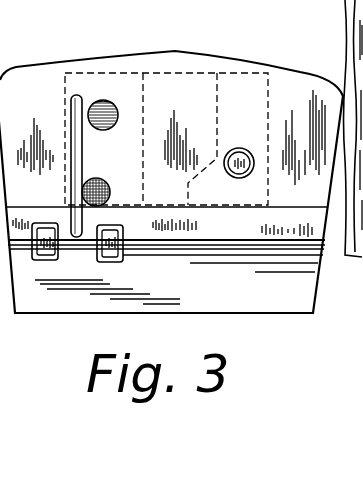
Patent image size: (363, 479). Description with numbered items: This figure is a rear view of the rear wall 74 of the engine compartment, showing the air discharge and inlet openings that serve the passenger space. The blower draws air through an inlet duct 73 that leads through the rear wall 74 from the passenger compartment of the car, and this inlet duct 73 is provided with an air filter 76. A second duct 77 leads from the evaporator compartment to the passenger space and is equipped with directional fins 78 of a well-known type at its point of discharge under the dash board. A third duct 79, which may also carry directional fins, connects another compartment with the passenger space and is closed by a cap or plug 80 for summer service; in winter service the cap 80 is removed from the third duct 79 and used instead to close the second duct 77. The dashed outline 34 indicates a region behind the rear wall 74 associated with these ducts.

The dashed compartment outline 34 is at (185, 73).
The rear wall 74 is at (283, 82).
The air filter 76 is at (97, 177).
The second duct 77 is at (103, 100).
The directional fins 78 is at (117, 110).
The inlet duct 73 is at (107, 189).
The third duct 79 is at (243, 178).
The cap or plug 80 is at (243, 148).